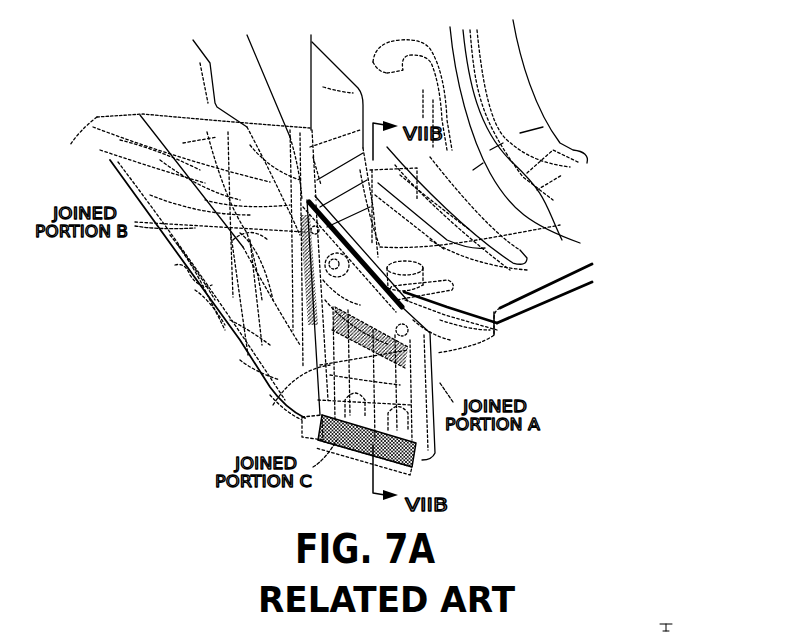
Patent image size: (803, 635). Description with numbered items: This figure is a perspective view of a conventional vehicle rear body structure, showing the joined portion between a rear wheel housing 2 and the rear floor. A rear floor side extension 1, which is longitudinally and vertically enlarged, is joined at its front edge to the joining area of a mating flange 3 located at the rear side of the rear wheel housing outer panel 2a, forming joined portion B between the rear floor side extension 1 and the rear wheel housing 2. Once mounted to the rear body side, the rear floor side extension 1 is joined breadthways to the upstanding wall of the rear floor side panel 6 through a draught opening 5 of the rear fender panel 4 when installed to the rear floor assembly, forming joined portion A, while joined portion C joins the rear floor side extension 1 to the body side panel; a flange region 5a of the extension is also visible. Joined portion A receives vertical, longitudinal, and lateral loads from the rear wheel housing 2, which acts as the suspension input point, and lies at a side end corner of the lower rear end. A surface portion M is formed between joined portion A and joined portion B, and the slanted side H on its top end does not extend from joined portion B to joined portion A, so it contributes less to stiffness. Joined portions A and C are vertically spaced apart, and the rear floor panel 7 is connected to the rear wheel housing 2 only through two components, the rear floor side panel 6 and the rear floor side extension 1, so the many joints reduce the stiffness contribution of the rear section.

The rear floor side extension 1 is at (273, 413).
The rear wheel housing 2 is at (333, 54).
The rear wheel housing outer panel 2a is at (175, 265).
The mating flange 3 is at (215, 126).
The rear fender panel 4 is at (193, 293).
The draught opening 5 is at (243, 337).
The bracket upper flange 5a is at (430, 357).
The rear floor side panel 6 is at (478, 338).
The rear floor panel 7 is at (572, 146).
The slanted side H is at (560, 232).
The surface portion M is at (497, 323).